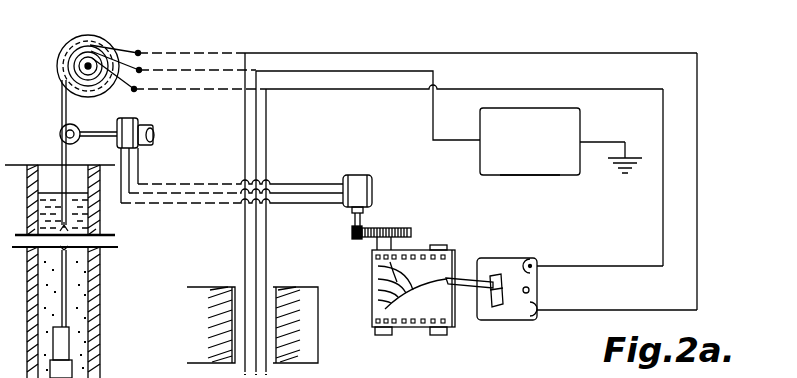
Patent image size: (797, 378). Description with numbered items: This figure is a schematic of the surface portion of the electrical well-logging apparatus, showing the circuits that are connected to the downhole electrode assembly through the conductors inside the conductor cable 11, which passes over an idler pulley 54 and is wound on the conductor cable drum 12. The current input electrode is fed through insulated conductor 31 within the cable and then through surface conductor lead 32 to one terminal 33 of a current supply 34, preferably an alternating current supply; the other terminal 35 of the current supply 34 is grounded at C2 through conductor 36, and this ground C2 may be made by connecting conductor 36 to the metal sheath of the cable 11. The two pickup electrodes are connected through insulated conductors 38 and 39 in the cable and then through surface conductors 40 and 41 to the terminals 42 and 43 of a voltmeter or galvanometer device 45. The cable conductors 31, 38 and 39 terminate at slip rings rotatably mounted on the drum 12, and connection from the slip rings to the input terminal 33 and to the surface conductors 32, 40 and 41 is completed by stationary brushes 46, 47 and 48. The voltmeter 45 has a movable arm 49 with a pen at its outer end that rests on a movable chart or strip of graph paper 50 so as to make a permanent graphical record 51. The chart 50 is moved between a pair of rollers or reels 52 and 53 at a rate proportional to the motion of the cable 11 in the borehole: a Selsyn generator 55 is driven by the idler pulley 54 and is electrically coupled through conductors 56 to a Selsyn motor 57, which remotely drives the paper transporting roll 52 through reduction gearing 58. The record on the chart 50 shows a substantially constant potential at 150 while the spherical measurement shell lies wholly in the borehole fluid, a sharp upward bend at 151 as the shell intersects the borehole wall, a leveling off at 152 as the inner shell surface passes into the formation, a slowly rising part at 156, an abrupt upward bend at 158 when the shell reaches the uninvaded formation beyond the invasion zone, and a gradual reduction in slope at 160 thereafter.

The conductor cable 11 is at (62, 104).
The conductor cable drum 12 is at (58, 60).
The insulated conductor 31 is at (257, 267).
The surface conductor lead 32 is at (328, 71).
The terminal of current supply 33 is at (479, 145).
The current supply 34 is at (530, 176).
The other terminal of current supply 35 is at (582, 140).
The conductor 36 is at (625, 141).
The ground C2 is at (623, 165).
The insulated conductor 38 is at (245, 248).
The insulated conductor 39 is at (257, 240).
The surface conductor 40 is at (697, 172).
The surface conductor 41 is at (663, 145).
The terminal of voltmeter 42 is at (527, 320).
The terminal of voltmeter 43 is at (537, 262).
The voltmeter or galvanometer device 45 is at (510, 255).
The stationary brush 46 is at (141, 68).
The stationary brush 47 is at (133, 49).
The stationary brush 48 is at (139, 88).
The movable arm 49 is at (467, 285).
The chart or strip of graph paper 50 is at (410, 328).
The graphical record 51 is at (378, 265).
The roller or reel 52 is at (382, 335).
The roller or reel 53 is at (440, 335).
The idler pulley 54 is at (75, 128).
The Selsyn generator 55 is at (132, 120).
The conductors 56 is at (303, 202).
The Selsyn motor 57 is at (358, 176).
The reduction gearing 58 is at (381, 222).
The constant portion of curve 150 is at (378, 302).
The upward bend of curve 151 is at (378, 291).
The leveling off of curve 152 is at (378, 280).
The later part of curve 156 is at (402, 271).
The abrupt upward bend of curve 158 is at (412, 288).
The reduced-slope portion of curve 160 is at (430, 255).